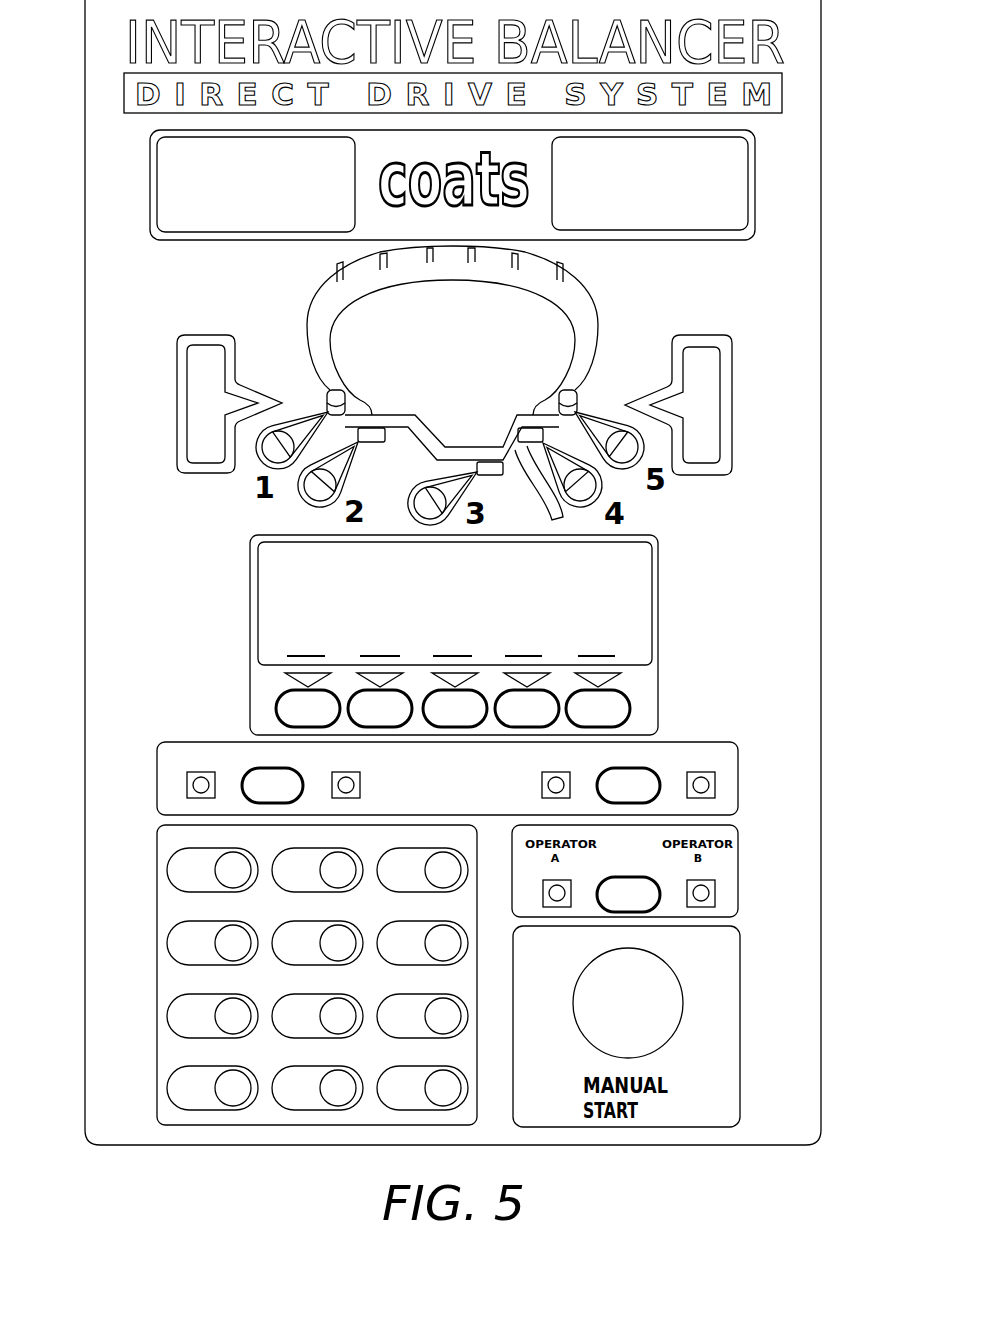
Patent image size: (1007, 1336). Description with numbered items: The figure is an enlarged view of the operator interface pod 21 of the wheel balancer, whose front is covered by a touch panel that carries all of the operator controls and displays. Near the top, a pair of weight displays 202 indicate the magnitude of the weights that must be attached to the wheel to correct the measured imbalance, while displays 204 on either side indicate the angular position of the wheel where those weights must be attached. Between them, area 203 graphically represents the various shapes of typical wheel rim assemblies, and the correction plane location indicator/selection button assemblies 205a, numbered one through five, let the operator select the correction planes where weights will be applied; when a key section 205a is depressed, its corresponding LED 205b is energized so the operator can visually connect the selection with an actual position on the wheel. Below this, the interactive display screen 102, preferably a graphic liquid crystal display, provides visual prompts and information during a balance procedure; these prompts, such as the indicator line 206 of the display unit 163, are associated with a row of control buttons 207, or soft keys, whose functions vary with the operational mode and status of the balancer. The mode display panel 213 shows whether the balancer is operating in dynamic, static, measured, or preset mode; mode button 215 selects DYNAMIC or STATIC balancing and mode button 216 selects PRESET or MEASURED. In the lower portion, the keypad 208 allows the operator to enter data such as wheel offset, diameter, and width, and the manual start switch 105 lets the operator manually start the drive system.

The operator interface pod 21 is at (850, 111).
The weight displays 202 is at (258, 184).
The correction plane location indicator/selection button assembly 205a is at (607, 410).
The LED 205b is at (578, 394).
The displays 204 is at (195, 403).
The display unit 163 is at (734, 589).
The interactive display screen 102 is at (420, 620).
The display cursor line 206 is at (278, 652).
The control buttons 207 is at (633, 707).
The area 203 is at (461, 789).
The mode display panel 213 is at (727, 808).
The mode button 215 is at (253, 793).
The mode button 216 is at (658, 790).
The keypad 208 is at (223, 1125).
The manual start switch 105 is at (678, 987).